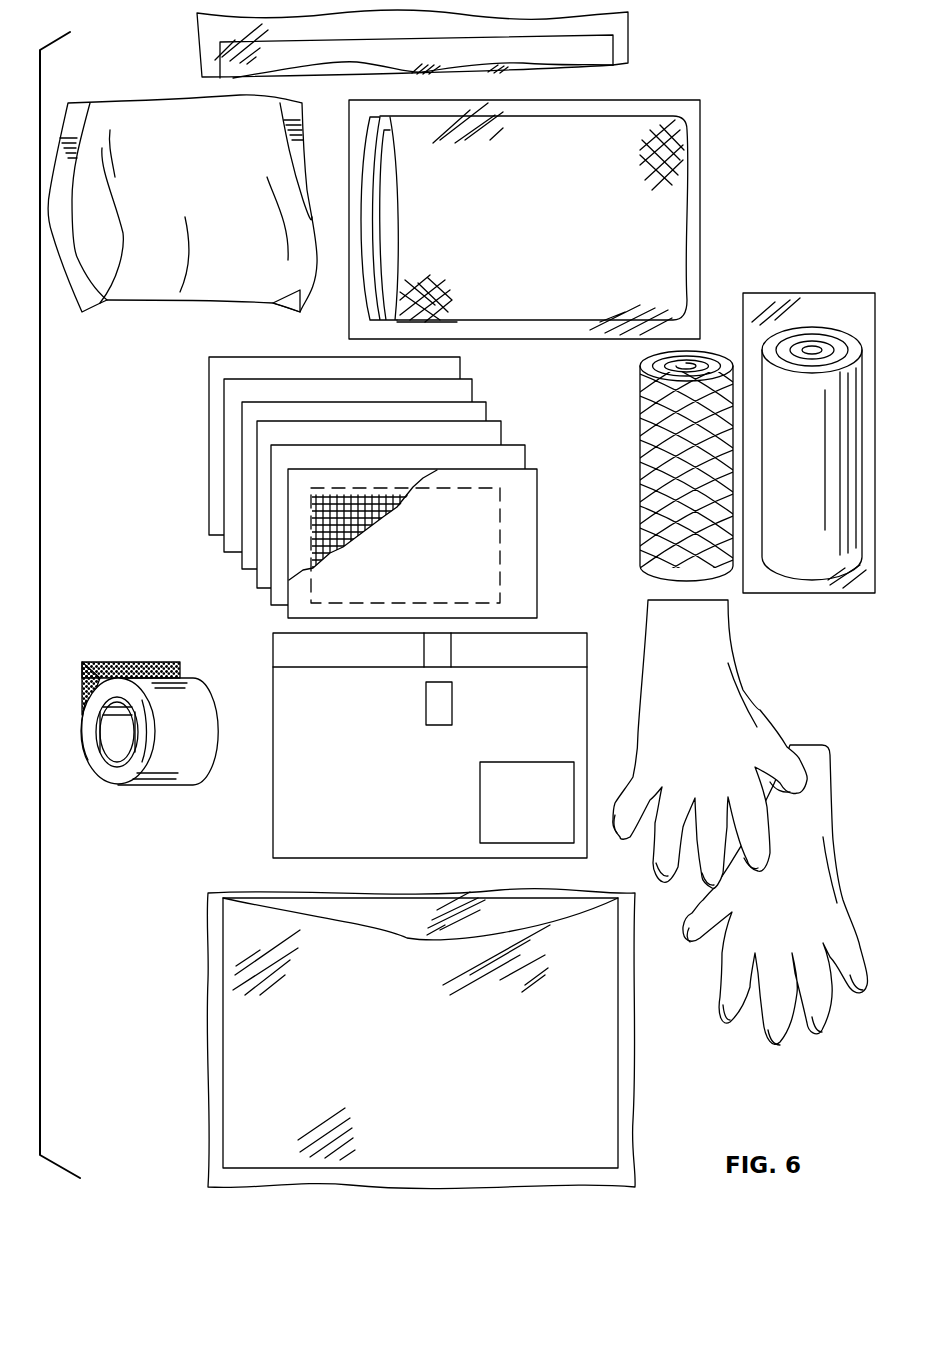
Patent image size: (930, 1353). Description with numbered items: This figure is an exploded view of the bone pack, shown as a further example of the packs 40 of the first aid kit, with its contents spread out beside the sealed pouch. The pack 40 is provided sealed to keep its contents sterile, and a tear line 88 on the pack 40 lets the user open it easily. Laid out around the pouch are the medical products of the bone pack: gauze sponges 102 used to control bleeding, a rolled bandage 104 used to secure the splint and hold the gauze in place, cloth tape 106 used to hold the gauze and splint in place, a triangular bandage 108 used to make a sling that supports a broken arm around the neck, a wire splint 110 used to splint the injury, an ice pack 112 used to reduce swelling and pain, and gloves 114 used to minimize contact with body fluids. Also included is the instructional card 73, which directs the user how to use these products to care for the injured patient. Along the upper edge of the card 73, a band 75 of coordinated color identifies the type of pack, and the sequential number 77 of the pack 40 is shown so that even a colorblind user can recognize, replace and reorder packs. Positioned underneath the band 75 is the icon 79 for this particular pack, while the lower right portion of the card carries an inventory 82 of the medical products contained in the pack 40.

The pack 40 is at (632, 1080).
The instructional card 73 is at (293, 798).
The band 75 is at (580, 650).
The sequential number 77 is at (424, 650).
The icon 79 is at (433, 707).
The inventory 82 is at (553, 780).
The tear line 88 is at (623, 65).
The gauze sponges 102 is at (214, 470).
The rolled bandage 104 is at (827, 302).
The cloth tape 106 is at (145, 662).
The triangular bandage 108 is at (690, 182).
The wire splint 110 is at (645, 424).
The ice pack 112 is at (141, 295).
The gloves 114 is at (720, 690).